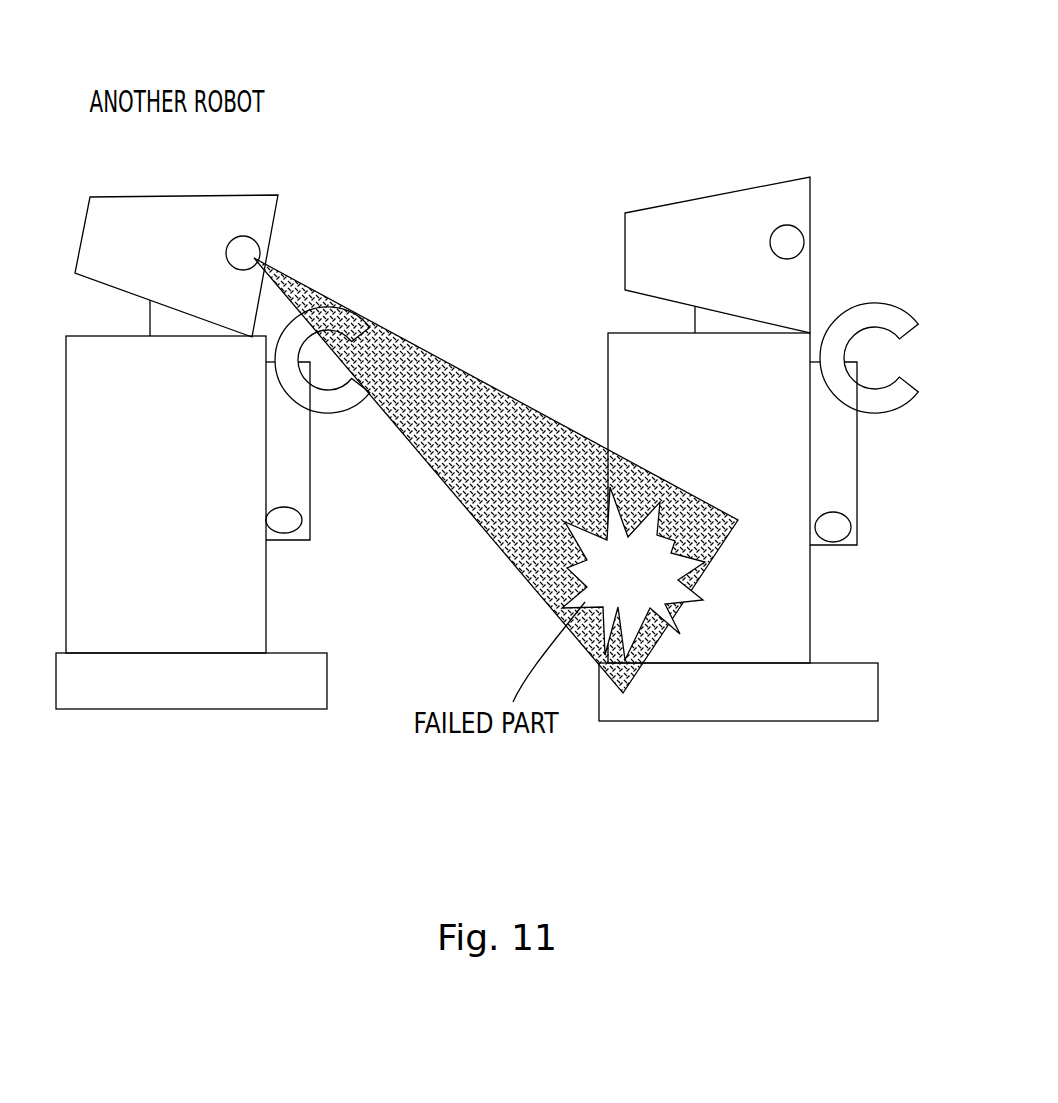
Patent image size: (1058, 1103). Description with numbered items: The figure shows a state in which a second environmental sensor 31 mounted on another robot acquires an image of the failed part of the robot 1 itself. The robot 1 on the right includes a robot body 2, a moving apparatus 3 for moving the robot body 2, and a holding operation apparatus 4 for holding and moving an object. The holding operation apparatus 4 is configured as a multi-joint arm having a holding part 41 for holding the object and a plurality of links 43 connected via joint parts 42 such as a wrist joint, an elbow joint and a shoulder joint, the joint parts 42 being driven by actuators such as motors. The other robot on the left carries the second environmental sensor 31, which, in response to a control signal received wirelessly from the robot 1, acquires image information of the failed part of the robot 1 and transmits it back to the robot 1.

The robot 1 is at (699, 113).
The robot body 2 is at (803, 633).
The moving apparatus 3 is at (872, 690).
The holding operation apparatus 4 is at (873, 422).
The second environmental sensor 31 is at (247, 236).
The holding part 41 is at (878, 310).
The joint parts 42 is at (833, 532).
The links 43 is at (840, 468).